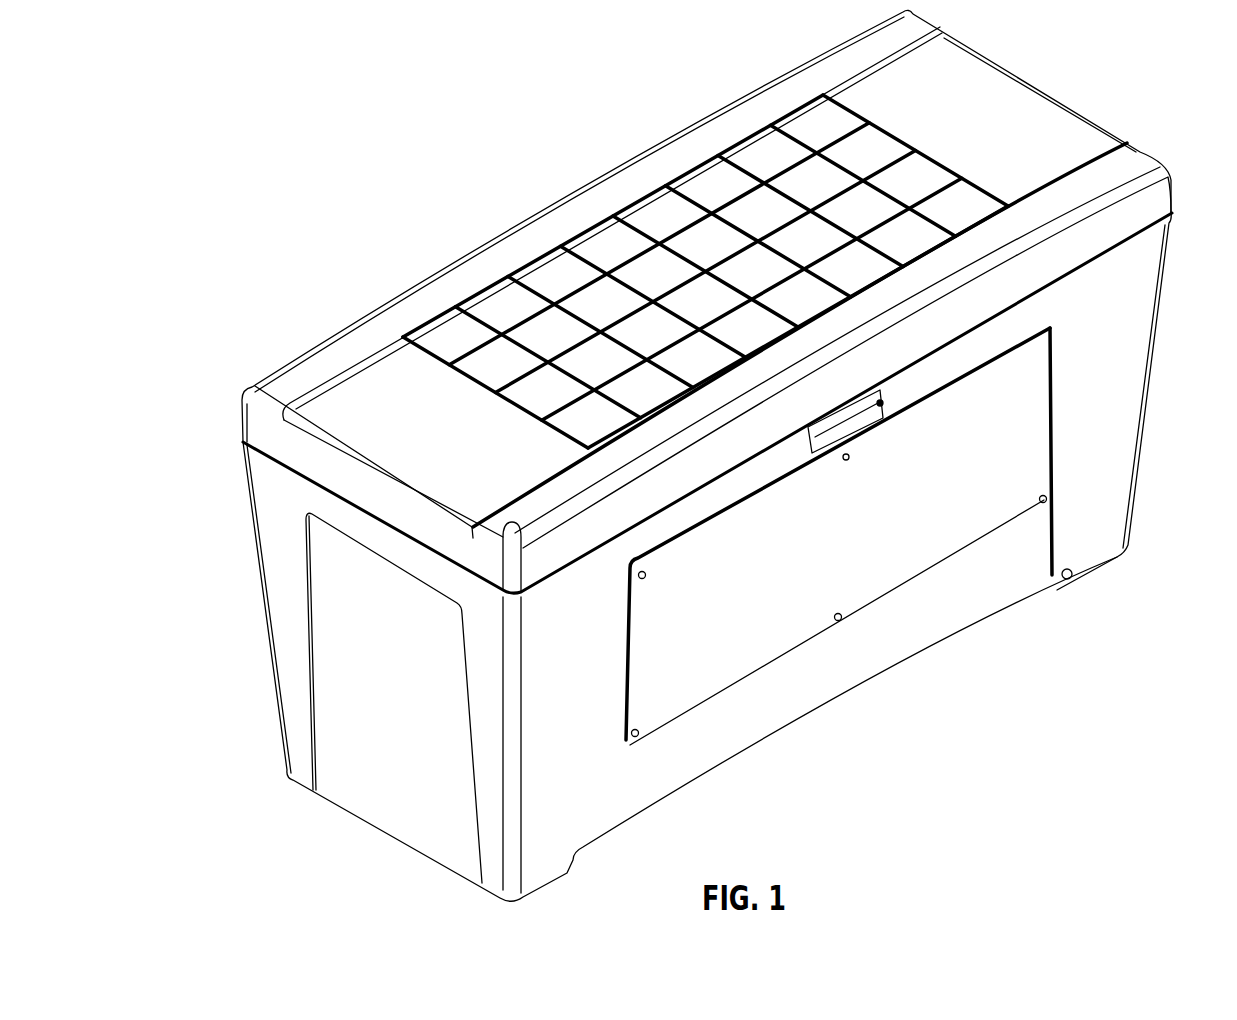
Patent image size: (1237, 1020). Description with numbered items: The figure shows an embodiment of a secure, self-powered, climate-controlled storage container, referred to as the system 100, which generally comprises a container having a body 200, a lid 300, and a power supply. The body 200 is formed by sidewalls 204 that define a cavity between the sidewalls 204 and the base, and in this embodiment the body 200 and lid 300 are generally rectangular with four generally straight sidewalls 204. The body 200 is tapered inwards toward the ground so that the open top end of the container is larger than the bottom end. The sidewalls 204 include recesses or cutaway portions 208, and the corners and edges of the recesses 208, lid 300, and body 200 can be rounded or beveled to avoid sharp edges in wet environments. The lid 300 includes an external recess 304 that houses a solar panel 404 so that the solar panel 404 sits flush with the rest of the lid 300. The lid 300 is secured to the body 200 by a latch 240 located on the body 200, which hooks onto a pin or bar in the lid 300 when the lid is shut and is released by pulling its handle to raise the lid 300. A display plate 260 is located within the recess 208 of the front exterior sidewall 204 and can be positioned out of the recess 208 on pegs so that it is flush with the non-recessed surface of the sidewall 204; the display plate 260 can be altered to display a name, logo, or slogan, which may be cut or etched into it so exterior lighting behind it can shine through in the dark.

The system 100 is at (457, 160).
The body 200 is at (1134, 396).
The sidewall 204 is at (1114, 491).
The recess 208 is at (881, 647).
The latch 240 is at (876, 439).
The display plate 260 is at (767, 620).
The lid 300 is at (298, 385).
The external recess 304 is at (1068, 137).
The solar panel 404 is at (920, 182).